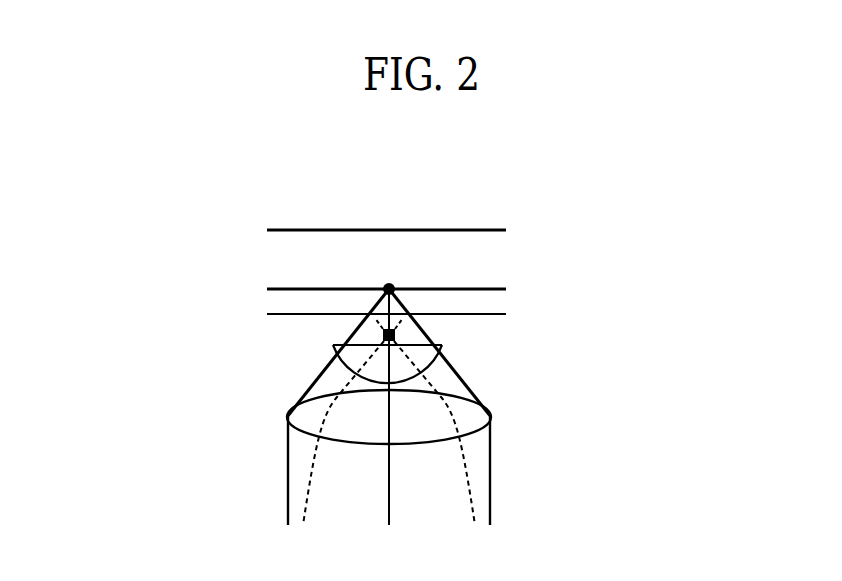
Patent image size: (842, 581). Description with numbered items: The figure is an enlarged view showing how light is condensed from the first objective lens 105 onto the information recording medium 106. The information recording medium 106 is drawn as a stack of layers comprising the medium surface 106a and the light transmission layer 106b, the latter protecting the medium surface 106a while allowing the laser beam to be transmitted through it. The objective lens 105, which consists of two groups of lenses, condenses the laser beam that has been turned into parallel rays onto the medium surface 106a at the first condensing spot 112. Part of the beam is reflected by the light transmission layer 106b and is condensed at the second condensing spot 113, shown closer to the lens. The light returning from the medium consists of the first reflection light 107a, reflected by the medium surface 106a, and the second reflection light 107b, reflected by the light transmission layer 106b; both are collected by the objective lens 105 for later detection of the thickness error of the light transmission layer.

The first objective lens 105 is at (307, 368).
The information recording medium 106 is at (409, 263).
The medium surface 106a is at (282, 290).
The light transmission layer 106b is at (268, 305).
The first reflection light 107a is at (490, 468).
The second reflection light 107b is at (433, 383).
The first condensing spot 112 is at (382, 276).
The second condensing spot 113 is at (400, 335).